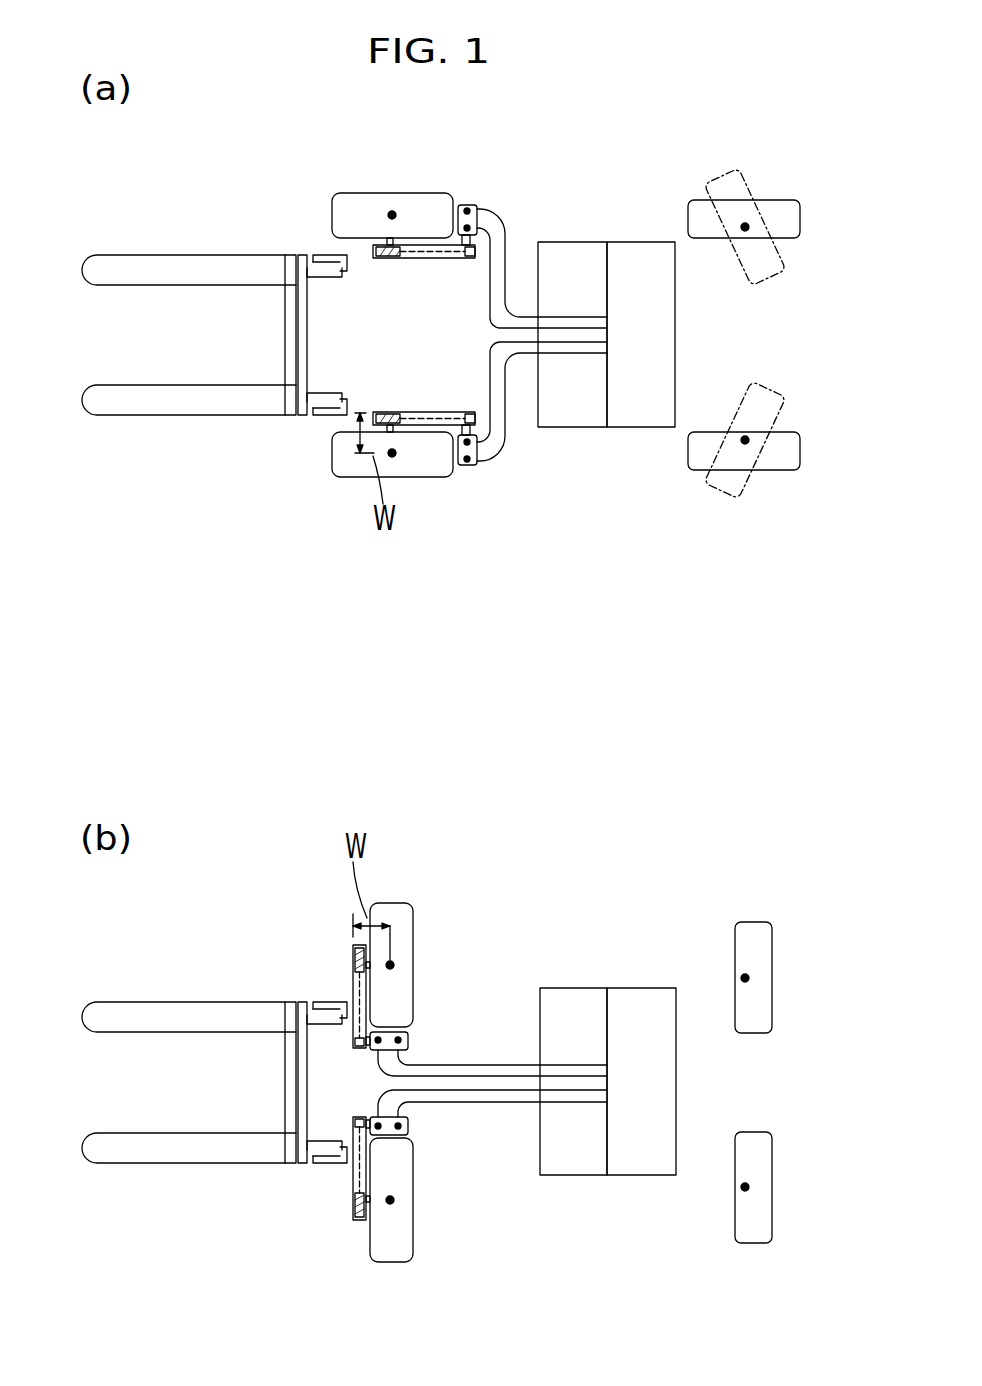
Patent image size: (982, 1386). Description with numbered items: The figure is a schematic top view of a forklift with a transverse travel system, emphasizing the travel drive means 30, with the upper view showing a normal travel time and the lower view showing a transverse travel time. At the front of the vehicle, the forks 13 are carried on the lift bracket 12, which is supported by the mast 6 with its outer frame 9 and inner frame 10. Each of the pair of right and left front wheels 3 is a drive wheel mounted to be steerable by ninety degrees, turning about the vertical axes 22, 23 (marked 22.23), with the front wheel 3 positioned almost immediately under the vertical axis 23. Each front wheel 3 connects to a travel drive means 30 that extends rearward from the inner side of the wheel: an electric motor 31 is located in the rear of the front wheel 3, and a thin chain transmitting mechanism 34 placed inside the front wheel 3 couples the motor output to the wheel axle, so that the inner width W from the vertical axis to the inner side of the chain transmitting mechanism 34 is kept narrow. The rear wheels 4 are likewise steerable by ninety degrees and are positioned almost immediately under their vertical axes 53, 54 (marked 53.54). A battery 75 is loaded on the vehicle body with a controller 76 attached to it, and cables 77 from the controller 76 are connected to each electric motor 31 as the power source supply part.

The front wheel 3 is at (355, 193).
The rear wheel 4 is at (760, 238).
The mast 6 is at (312, 420).
The outer frame 9 is at (318, 255).
The inner frame 10 is at (329, 269).
The lift bracket 12 is at (294, 355).
The fork 13 is at (143, 407).
The vertical axis 22 is at (459, 687).
The vertical axis 23 is at (392, 212).
The vertical axes 22.23 is at (459, 687).
The travel drive means 30 is at (435, 266).
The electric motor 31 is at (470, 200).
The chain transmitting mechanism 34 is at (410, 260).
The vertical axis 53 is at (700, 732).
The vertical axis 54 is at (745, 437).
The vertical axes 53.54 is at (700, 732).
The battery 75 is at (556, 430).
The controller 76 is at (627, 430).
The cable 77 is at (562, 327).